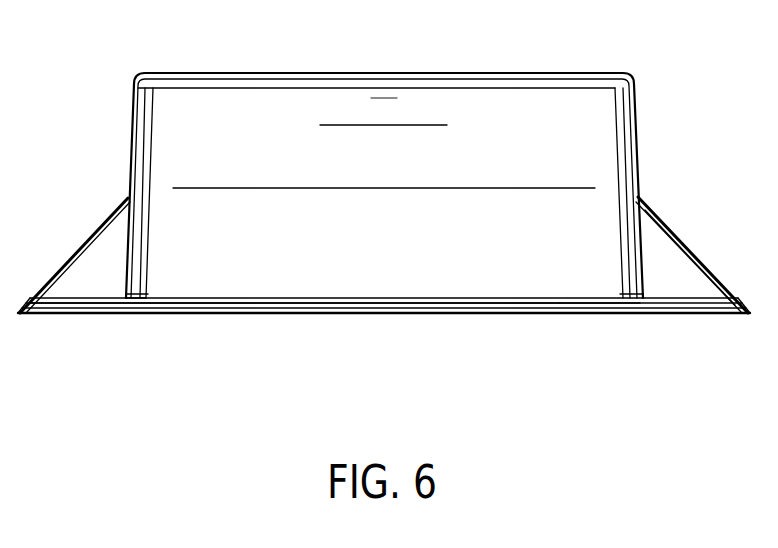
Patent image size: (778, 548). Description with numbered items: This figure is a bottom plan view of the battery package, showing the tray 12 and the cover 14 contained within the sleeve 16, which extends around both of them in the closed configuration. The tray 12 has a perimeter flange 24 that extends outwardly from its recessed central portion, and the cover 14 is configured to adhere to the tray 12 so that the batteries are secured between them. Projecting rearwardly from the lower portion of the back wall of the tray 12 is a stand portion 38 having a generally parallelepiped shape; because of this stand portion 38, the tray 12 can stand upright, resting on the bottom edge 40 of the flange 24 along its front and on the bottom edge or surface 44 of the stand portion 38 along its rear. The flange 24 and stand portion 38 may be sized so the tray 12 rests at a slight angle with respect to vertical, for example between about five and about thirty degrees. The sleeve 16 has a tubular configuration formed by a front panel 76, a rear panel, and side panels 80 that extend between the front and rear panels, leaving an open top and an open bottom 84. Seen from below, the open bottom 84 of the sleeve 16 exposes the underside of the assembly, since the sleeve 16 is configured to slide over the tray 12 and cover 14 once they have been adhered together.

The tray 12 is at (168, 279).
The cover 14 is at (608, 310).
The sleeve 16 is at (647, 202).
The perimeter flange 24 is at (63, 303).
The stand portion 38 is at (557, 102).
The bottom edge 40 is at (558, 303).
The bottom edge or surface 44 is at (207, 90).
The front panel 76 is at (217, 313).
The side panels 80 is at (82, 247).
The open bottom 84 is at (665, 272).